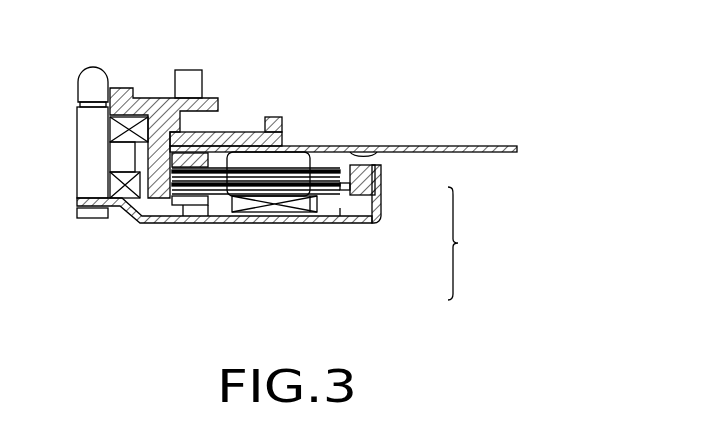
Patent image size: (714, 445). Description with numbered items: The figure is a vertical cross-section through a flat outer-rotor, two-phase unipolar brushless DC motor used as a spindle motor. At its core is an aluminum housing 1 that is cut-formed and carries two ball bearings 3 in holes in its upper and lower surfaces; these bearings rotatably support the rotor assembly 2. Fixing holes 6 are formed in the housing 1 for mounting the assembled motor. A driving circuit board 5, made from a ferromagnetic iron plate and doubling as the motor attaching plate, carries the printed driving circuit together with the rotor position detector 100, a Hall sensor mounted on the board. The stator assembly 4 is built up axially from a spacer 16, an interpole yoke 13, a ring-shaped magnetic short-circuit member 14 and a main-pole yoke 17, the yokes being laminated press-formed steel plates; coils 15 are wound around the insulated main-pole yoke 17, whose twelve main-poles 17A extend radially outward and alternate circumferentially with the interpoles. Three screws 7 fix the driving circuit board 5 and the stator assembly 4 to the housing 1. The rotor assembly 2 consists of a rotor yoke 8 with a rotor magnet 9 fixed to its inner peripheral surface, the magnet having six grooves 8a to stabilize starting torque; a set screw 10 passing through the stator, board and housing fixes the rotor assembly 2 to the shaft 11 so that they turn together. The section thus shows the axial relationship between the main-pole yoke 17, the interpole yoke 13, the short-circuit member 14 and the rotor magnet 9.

The housing 1 is at (233, 107).
The rotor assembly 2 is at (467, 243).
The ball bearings 3 is at (118, 132).
The stator assembly 4 is at (230, 206).
The driving circuit board 5 is at (495, 146).
The fixing holes 6 is at (253, 110).
The screws 7 is at (162, 222).
The rotor yoke 8 is at (374, 224).
The grooves 8a is at (349, 218).
The rotor magnet 9 is at (381, 192).
The set screw 10 is at (92, 220).
The shaft 11 is at (98, 67).
The interpole yoke 13 is at (326, 170).
The magnetic short-circuit member 14 is at (215, 99).
The coils 15 is at (281, 213).
The spacer 16 is at (162, 98).
The main-pole yoke 17 is at (204, 220).
The main-poles 17A is at (314, 213).
The rotor position detector 100 is at (370, 146).